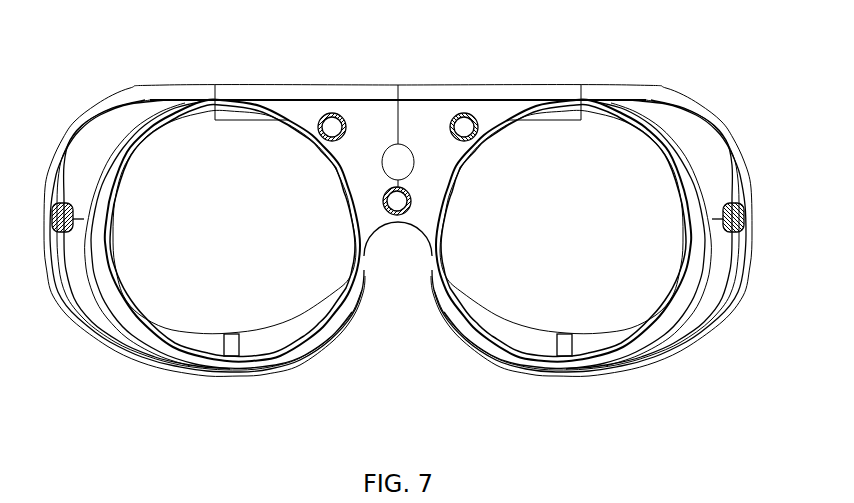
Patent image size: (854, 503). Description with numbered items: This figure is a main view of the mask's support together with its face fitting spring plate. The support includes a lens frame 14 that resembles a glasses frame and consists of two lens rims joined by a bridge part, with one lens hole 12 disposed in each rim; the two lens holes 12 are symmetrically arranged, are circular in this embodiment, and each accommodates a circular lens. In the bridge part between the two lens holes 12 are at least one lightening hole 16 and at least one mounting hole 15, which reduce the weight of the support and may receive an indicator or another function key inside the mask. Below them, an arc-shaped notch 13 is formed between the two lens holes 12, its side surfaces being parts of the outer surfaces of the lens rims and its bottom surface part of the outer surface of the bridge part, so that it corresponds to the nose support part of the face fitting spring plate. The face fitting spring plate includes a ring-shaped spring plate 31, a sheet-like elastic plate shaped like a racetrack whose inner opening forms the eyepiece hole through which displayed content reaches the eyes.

The lens hole 12 is at (205, 280).
The arc-shaped notch 13 is at (398, 216).
The lens frame 14 is at (136, 323).
The mounting hole 15 is at (398, 162).
The lightening hole 16 is at (333, 128).
The ring-shaped spring plate 31 is at (65, 317).